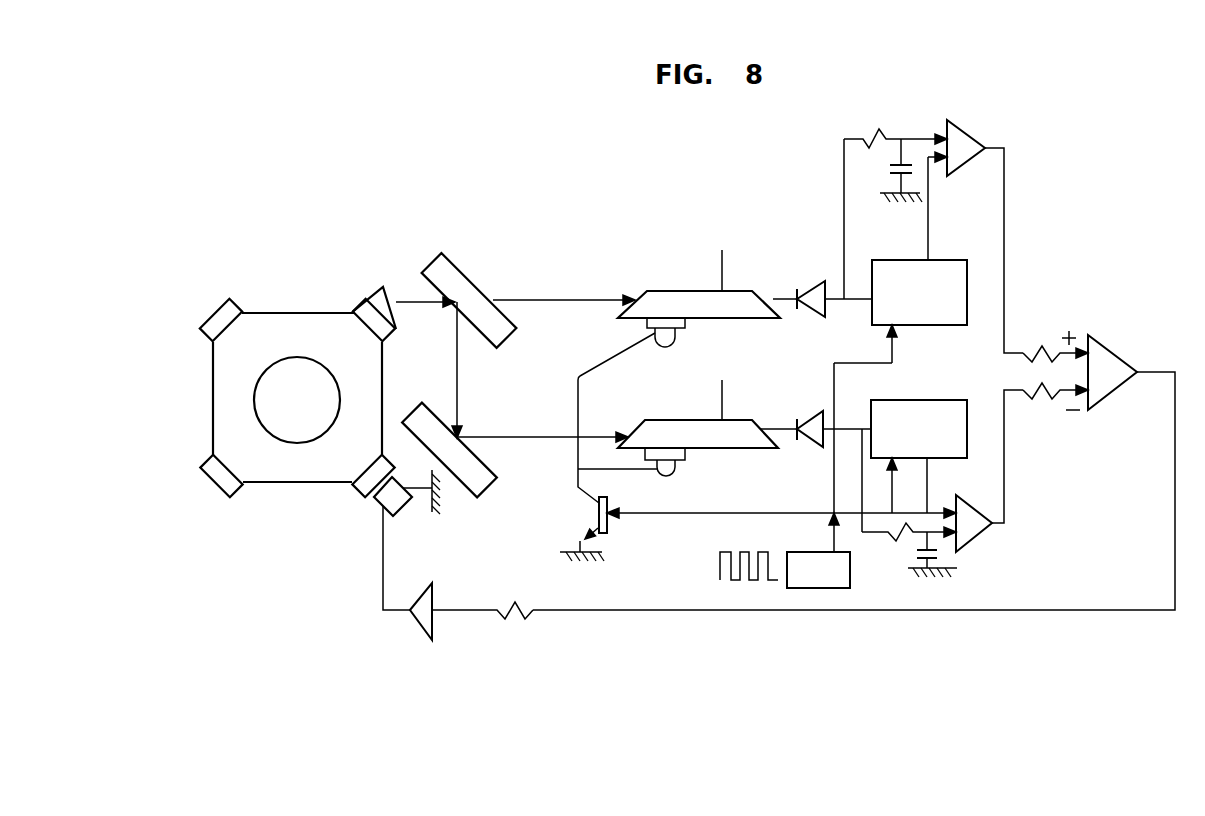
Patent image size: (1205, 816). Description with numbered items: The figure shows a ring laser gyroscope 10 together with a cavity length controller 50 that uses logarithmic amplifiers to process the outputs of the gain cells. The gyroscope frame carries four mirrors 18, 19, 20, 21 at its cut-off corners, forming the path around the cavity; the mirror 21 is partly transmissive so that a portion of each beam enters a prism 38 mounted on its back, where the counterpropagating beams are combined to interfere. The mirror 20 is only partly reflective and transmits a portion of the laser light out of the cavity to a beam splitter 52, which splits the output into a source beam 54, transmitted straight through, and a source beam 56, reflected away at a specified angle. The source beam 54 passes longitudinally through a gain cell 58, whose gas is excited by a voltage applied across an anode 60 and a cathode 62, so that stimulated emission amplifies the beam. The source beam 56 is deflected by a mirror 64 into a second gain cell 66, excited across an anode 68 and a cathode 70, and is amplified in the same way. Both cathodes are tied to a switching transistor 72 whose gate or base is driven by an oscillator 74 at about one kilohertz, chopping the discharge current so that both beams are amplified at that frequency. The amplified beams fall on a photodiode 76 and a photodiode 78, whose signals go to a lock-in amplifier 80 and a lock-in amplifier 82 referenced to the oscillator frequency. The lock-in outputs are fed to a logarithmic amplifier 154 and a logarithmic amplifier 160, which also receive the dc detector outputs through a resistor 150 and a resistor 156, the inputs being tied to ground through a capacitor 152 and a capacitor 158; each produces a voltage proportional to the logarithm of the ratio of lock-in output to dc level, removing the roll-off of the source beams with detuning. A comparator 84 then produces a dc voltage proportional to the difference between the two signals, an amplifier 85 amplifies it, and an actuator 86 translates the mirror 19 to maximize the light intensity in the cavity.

The ring laser gyroscope 10 is at (341, 589).
The mirror 18 is at (213, 490).
The mirror 19 is at (356, 494).
The mirror 20 is at (354, 311).
The mirror 21 is at (235, 296).
The prism 38 is at (375, 286).
The cavity length controller 50 is at (660, 218).
The beam splitter 52 is at (468, 272).
The source beam 54 is at (565, 299).
The source beam 56 is at (515, 430).
The gain cell 58 is at (665, 287).
The anode 60 is at (722, 270).
The cathode 62 is at (676, 337).
The mirror 64 is at (488, 490).
The gain cell 66 is at (752, 450).
The anode 68 is at (727, 392).
The cathode 70 is at (675, 467).
The transistor 72 is at (608, 517).
The oscillator 74 is at (835, 590).
The photodiode 76 is at (818, 278).
The photodiode 78 is at (812, 410).
The lock-in amplifier 80 is at (967, 315).
The lock-in amplifier 82 is at (967, 428).
The comparator 84 is at (1107, 390).
The amplifier 85 is at (420, 627).
The actuator 86 is at (400, 513).
The resistor 150 is at (872, 128).
The capacitor 152 is at (880, 178).
The logarithmic amplifier 154 is at (960, 122).
The resistor 156 is at (908, 542).
The capacitor 158 is at (947, 560).
The logarithmic amplifier 160 is at (973, 530).